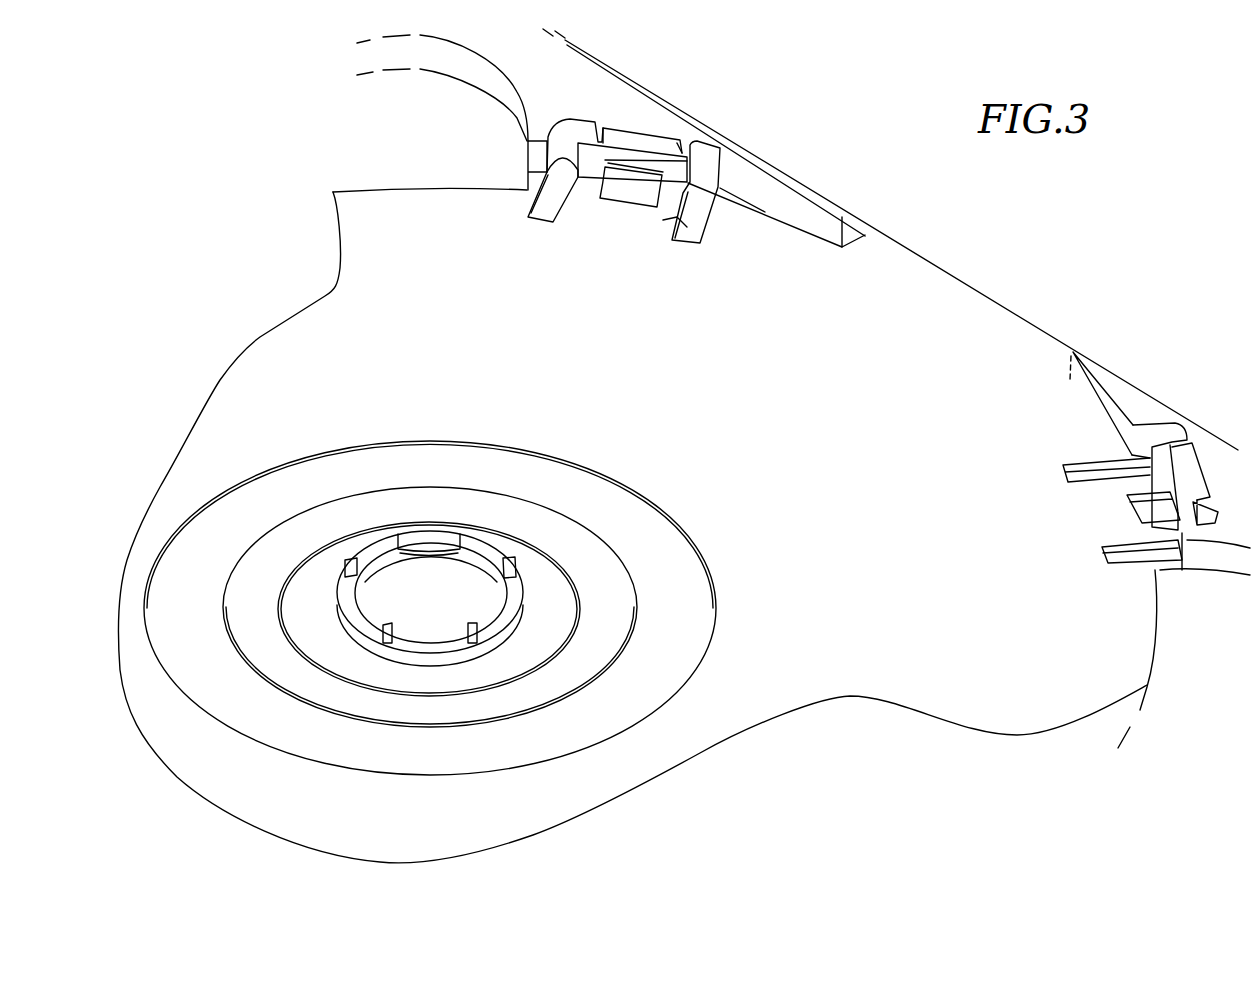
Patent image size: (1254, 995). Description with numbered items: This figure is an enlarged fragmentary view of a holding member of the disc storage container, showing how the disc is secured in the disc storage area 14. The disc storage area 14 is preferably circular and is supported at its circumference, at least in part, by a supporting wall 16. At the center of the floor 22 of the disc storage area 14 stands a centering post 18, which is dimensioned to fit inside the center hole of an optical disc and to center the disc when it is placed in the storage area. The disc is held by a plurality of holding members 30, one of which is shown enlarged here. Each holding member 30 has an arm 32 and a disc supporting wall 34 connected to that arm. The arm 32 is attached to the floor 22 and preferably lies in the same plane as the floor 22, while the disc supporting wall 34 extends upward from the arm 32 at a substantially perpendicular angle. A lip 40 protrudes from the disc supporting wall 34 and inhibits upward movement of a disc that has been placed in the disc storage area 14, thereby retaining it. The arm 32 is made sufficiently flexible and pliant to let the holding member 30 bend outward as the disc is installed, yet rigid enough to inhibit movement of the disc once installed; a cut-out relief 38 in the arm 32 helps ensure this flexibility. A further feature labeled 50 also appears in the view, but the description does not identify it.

The disc storage area 14 is at (882, 320).
The supporting wall 16 is at (1090, 397).
The centering post 18 is at (497, 627).
The floor 22 is at (852, 482).
The holding member 30 is at (575, 210).
The arm 32 is at (663, 220).
The disc supporting wall 34 is at (680, 182).
The cut-out relief 38 is at (635, 188).
The lip 40 is at (645, 165).
The arcuate wall 50 is at (462, 105).